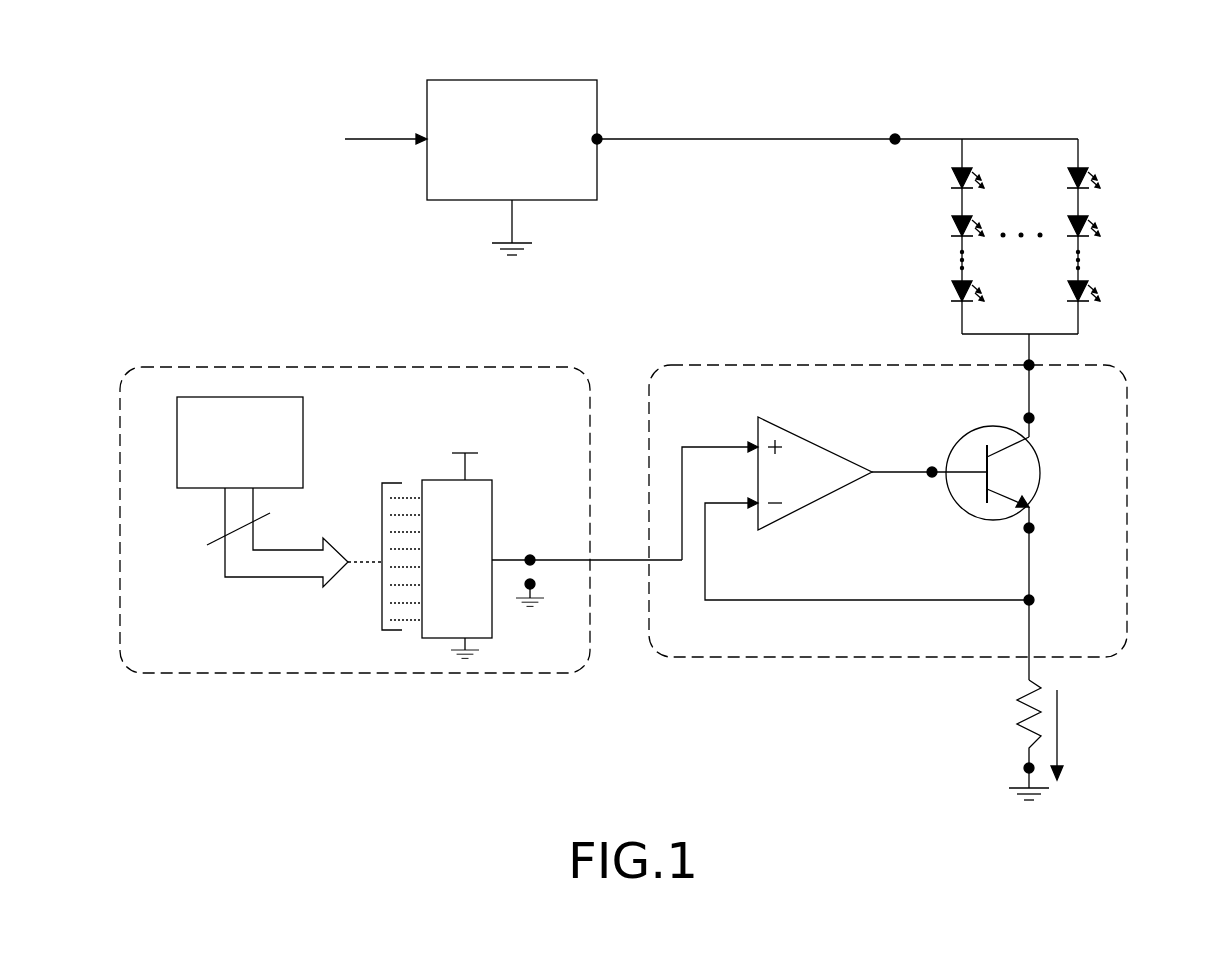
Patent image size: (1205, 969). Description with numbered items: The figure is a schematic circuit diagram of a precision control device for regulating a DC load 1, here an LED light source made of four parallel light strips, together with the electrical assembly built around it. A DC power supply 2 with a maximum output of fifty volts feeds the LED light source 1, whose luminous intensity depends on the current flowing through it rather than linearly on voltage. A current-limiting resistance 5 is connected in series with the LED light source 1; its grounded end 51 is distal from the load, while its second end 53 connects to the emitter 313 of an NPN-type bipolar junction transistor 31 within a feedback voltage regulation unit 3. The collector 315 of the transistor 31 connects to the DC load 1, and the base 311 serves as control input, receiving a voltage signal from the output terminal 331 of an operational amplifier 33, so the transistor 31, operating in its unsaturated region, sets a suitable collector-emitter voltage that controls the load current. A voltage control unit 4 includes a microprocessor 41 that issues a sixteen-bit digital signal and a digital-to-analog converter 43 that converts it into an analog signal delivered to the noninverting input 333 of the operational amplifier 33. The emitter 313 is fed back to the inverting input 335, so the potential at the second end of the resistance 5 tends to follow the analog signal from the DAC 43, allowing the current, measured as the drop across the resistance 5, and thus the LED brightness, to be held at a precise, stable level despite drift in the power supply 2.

The DC load 1 is at (1025, 217).
The power supply 2 is at (492, 136).
The feedback voltage regulation unit 3 is at (918, 497).
The voltage control unit 4 is at (401, 478).
The current-limiting resistance 5 is at (1029, 731).
The NPN-type bipolar junction transistor 31 is at (1022, 522).
The operational amplifier 33 is at (819, 469).
The microprocessor 41 is at (270, 490).
The digital-to-analog converter 43 is at (532, 547).
The grounded end of the resistance 51 is at (1002, 756).
The second end of the current-limiting resistor 53 is at (992, 622).
The base 311 is at (918, 509).
The emitter 313 is at (1063, 558).
The collector 315 is at (1064, 397).
The output terminal 331 is at (908, 512).
The noninverting input 333 is at (715, 468).
The inverting input 335 is at (867, 549).